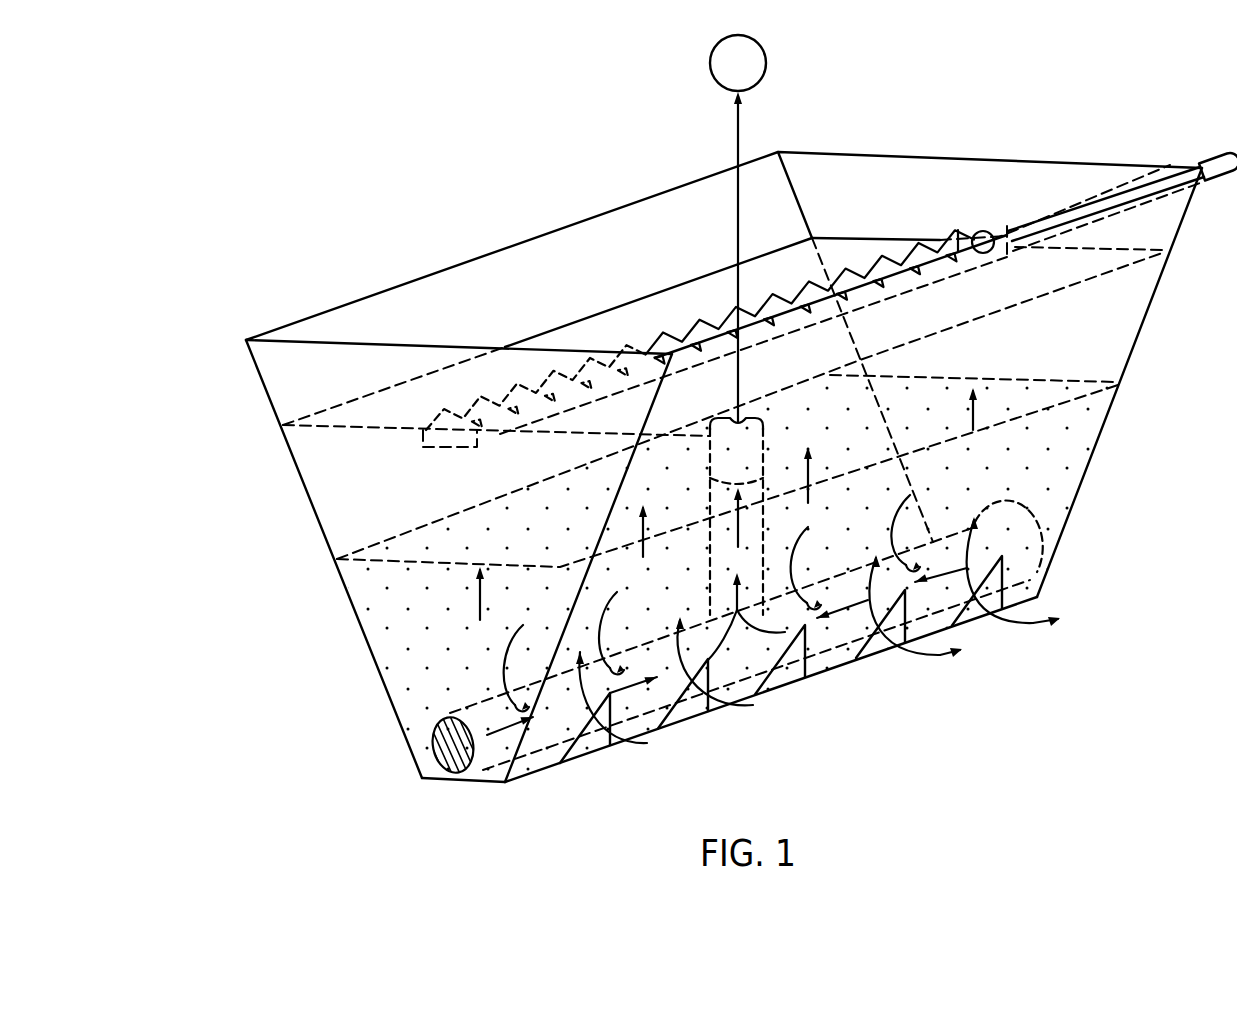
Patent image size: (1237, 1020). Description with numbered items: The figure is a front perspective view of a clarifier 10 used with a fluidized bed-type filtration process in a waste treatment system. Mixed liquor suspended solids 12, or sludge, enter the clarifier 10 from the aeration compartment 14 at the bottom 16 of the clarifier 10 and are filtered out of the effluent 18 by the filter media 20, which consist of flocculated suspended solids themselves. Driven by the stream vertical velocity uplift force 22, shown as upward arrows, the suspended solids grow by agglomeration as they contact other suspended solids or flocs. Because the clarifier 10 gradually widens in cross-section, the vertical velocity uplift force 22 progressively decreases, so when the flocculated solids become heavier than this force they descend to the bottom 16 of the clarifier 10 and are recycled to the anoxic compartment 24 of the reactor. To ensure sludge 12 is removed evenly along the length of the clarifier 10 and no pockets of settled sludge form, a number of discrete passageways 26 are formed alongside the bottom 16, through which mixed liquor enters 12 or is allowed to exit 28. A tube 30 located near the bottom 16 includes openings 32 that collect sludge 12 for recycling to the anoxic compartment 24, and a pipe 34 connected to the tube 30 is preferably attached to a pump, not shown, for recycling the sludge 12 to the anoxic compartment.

The clarifier 10 is at (352, 237).
The mixed liquor suspended solids 12 is at (641, 743).
The aeration compartment 14 is at (1168, 671).
The bottom of the clarifier 16 is at (1072, 553).
The effluent 18 is at (685, 343).
The filter media 20 is at (373, 605).
The vertical velocity uplift force 22 is at (480, 600).
The anoxic compartment 24 is at (724, 77).
The discrete passageways 26 is at (591, 752).
The exit of mixed liquor 28 is at (948, 667).
The tube 30 is at (433, 745).
The openings 32 is at (505, 660).
The pipe 34 is at (710, 462).